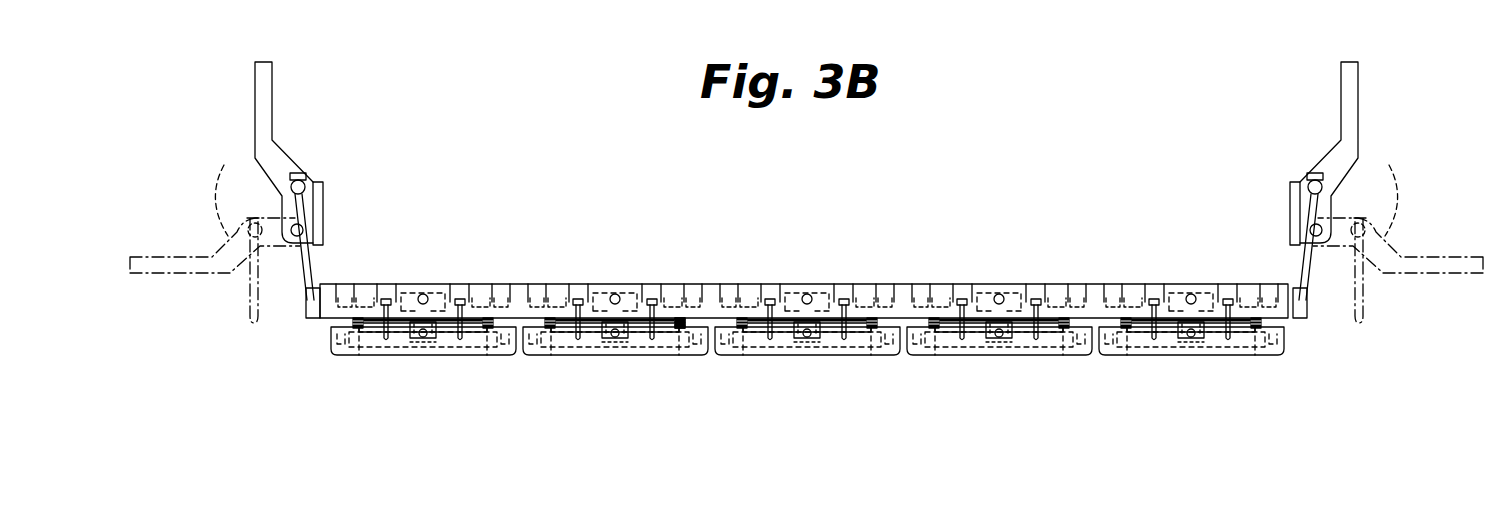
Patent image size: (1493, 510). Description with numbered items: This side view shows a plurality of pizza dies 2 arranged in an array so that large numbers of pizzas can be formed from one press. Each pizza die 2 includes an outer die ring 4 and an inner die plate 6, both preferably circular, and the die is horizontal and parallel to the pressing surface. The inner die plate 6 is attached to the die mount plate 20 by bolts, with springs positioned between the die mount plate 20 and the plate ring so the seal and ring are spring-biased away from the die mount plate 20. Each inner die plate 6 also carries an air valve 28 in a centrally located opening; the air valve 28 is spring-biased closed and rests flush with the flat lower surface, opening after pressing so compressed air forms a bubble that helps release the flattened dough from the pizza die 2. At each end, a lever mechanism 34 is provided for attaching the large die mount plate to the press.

The pizza die 2 is at (356, 367).
The outer die ring 4 is at (690, 346).
The inner die plate 6 is at (586, 347).
The die mount plate 20 is at (866, 285).
The air valve 28 is at (822, 342).
The lever mechanism 34 is at (262, 160).